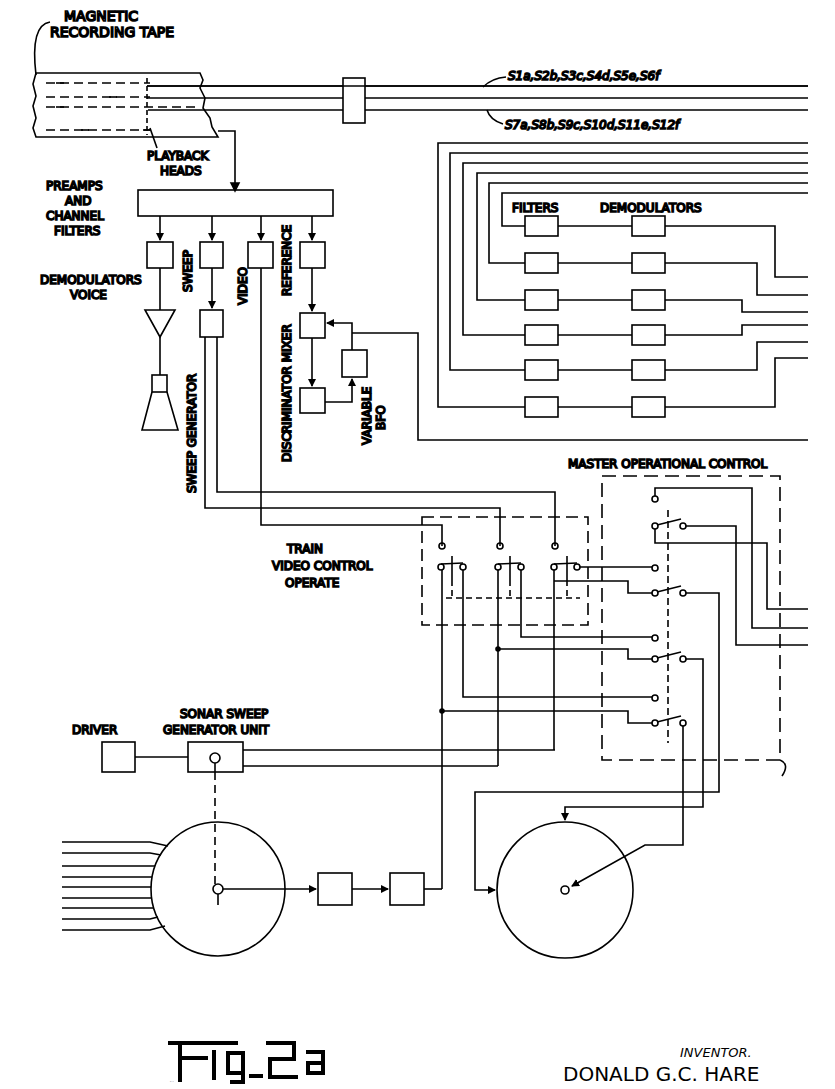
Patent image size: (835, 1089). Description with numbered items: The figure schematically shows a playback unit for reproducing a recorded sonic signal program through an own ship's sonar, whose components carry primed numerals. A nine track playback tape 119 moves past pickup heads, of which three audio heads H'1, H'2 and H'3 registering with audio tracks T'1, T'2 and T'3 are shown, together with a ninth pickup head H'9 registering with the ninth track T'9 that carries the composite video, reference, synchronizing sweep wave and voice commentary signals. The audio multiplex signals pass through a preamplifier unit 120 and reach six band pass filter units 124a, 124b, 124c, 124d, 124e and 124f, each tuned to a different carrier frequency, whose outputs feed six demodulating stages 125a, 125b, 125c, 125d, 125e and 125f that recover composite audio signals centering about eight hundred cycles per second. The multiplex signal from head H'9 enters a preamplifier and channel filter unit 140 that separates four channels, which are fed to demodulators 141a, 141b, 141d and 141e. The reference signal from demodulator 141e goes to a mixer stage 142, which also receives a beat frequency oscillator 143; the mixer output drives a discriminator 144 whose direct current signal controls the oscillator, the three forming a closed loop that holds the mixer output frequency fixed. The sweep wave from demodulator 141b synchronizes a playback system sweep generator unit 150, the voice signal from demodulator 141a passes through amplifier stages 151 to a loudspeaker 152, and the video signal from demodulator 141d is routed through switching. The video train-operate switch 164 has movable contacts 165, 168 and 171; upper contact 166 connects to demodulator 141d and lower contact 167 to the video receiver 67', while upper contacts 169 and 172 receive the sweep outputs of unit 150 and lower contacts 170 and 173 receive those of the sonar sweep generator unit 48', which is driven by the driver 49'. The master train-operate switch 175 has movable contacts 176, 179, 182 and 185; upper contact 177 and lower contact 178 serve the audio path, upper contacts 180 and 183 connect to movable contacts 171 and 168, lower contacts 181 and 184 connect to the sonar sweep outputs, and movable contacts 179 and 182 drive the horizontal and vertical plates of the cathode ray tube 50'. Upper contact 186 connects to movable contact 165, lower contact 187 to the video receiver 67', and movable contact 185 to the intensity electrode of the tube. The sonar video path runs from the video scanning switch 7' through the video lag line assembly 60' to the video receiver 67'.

The first audio track T'1 is at (62, 65).
The second audio track T'2 is at (113, 72).
The third audio track T'3 is at (57, 117).
The ninth track T'9 is at (73, 146).
The first audio pickup head H'1 is at (477, 66).
The second audio pickup head H'2 is at (452, 111).
The third audio pickup head H'3 is at (477, 105).
The ninth pickup head H'9 is at (128, 146).
The playback tape 119 is at (200, 74).
The preamplifier unit 120 is at (352, 125).
The preamplifier and channel filter unit 140 is at (333, 205).
The voice demodulator 141a is at (147, 255).
The sweep wave demodulator 141b is at (200, 250).
The video composite signal demodulator 141d is at (248, 252).
The reference signal demodulator 141e is at (325, 256).
The mixer stage 142 is at (322, 315).
The beat frequency oscillator 143 is at (367, 360).
The discriminator 144 is at (310, 413).
The playback system sweep generator unit 150 is at (223, 333).
The amplifier stages 151 is at (147, 325).
The loudspeaker 152 is at (145, 413).
The band pass filter unit 124a is at (548, 236).
The band pass filter unit 124b is at (548, 273).
The band pass filter unit 124c is at (548, 310).
The band pass filter unit 124d is at (548, 345).
The band pass filter unit 124e is at (548, 380).
The band pass filter unit 124f is at (548, 417).
The demodulating stage 125a is at (655, 236).
The demodulating stage 125b is at (655, 273).
The demodulating stage 125c is at (655, 310).
The demodulating stage 125d is at (655, 345).
The demodulating stage 125e is at (655, 380).
The demodulating stage 125f is at (655, 417).
The video train-operate switch 164 is at (428, 626).
The first movable contact 165 is at (459, 563).
The upper fixed contact 166 is at (446, 543).
The lower fixed contact 167 is at (439, 570).
The second movable contact 168 is at (514, 563).
The upper fixed contact 169 is at (504, 543).
The lower fixed contact 170 is at (495, 570).
The third movable contact 171 is at (579, 562).
The upper fixed contact 172 is at (558, 543).
The lower fixed contact 173 is at (551, 570).
The master train-operate switch 175 is at (780, 522).
The first movable contact 176 is at (674, 523).
The upper fixed contact 177 is at (652, 499).
The lower fixed contact 178 is at (652, 526).
The second movable contact 179 is at (674, 590).
The upper fixed contact 180 is at (653, 566).
The lower fixed contact 181 is at (652, 597).
The third movable contact 182 is at (672, 656).
The upper fixed contact 183 is at (653, 635).
The lower fixed contact 184 is at (655, 663).
The fourth movable contact 185 is at (673, 720).
The upper fixed contact 186 is at (653, 696).
The lower fixed contact 187 is at (655, 727).
The driver 49' is at (117, 758).
The sonar sweep generator unit 48' is at (371, 813).
The video scanning switch 7' is at (181, 907).
The video lag line assembly 60' is at (344, 897).
The video receiver 67' is at (415, 892).
The cathode ray tube 50' is at (567, 902).